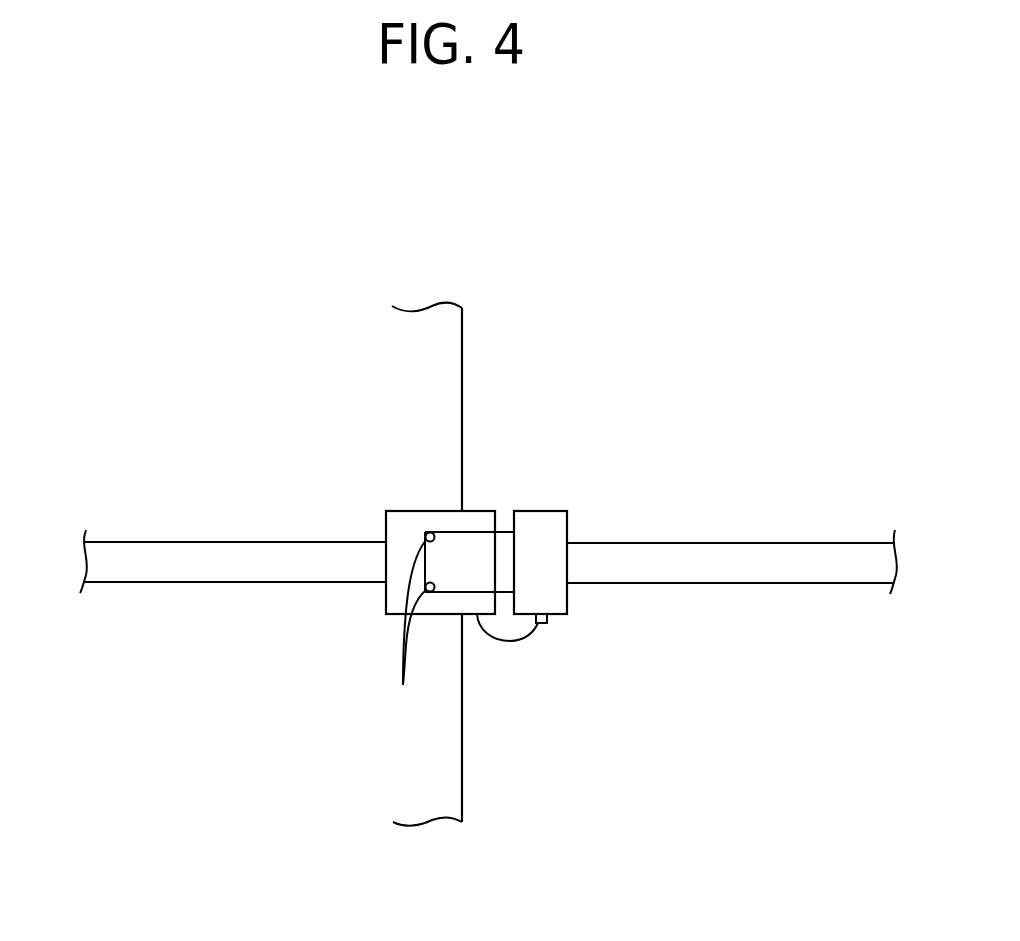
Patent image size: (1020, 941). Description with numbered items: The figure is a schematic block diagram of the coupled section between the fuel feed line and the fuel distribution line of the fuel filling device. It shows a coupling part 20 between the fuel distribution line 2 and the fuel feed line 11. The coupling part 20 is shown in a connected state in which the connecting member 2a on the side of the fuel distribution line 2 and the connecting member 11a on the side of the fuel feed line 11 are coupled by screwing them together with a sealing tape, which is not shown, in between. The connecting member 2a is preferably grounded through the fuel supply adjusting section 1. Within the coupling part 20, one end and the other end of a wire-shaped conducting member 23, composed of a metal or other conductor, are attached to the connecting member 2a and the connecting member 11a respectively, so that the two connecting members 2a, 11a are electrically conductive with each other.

The fuel supply adjusting section 1 is at (463, 760).
The fuel distribution line 2 is at (237, 583).
The connecting member 2a is at (412, 511).
The fuel feed line 11 is at (820, 584).
The connecting member 11a is at (546, 511).
The coupling part 20 is at (488, 532).
The wire-shaped conducting member 23 is at (520, 640).